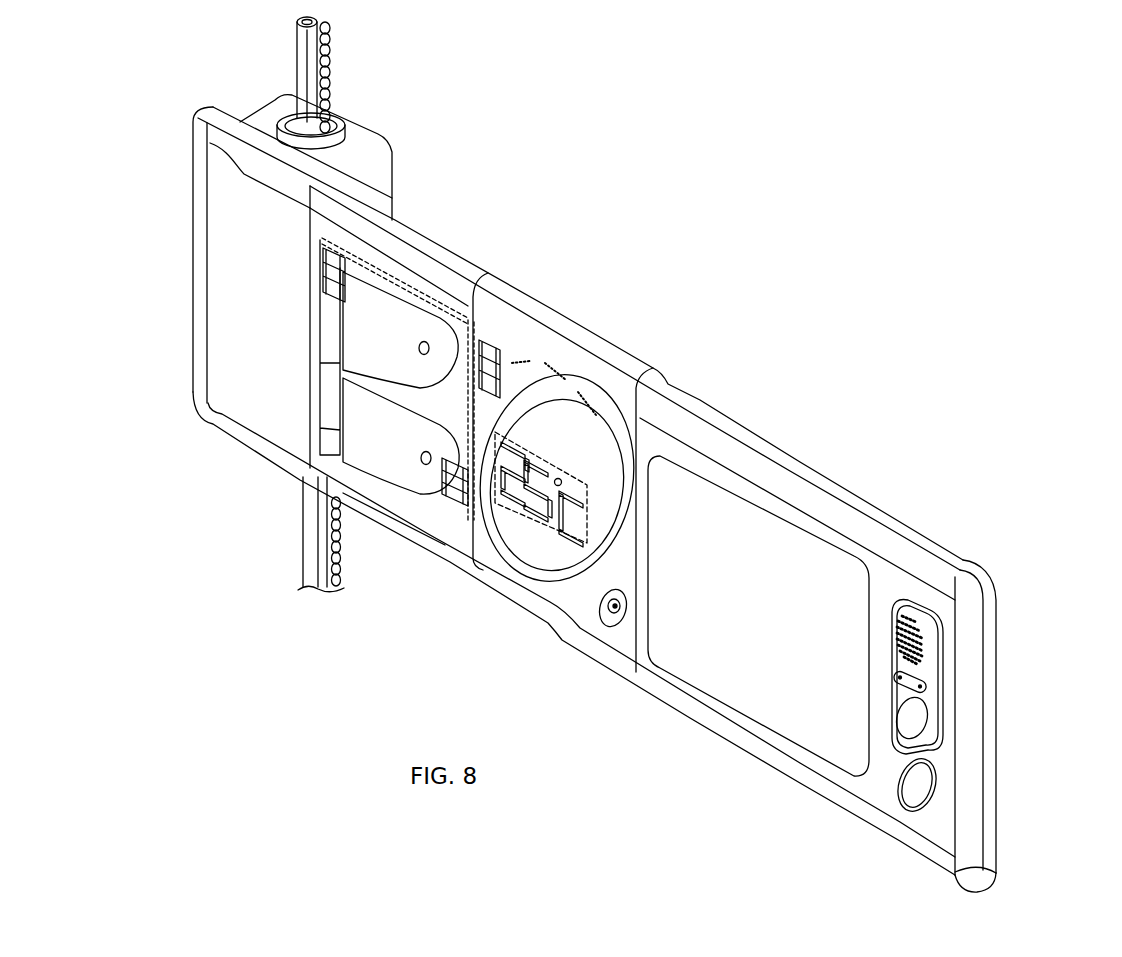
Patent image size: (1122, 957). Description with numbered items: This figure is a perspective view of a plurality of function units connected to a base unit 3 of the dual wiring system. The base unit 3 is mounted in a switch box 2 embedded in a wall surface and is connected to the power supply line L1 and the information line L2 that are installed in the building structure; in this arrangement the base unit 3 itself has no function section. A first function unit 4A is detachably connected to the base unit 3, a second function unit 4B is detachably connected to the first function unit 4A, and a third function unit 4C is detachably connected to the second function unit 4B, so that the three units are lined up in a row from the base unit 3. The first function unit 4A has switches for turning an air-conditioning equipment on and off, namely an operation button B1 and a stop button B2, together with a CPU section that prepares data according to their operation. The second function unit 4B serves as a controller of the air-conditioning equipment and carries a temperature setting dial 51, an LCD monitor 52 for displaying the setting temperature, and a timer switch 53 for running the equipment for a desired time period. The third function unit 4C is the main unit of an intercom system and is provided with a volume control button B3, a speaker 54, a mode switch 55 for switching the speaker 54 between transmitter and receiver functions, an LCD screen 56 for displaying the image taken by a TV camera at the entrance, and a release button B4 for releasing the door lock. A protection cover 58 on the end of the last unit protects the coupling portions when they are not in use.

The switch box 2 is at (385, 183).
The base unit 3 is at (220, 192).
The first function unit 4A is at (415, 258).
The second function unit 4B is at (547, 338).
The third function unit 4C is at (797, 490).
The temperature setting dial 51 is at (550, 407).
The LCD monitor 52 is at (523, 497).
The timer switch 53 is at (607, 613).
The speaker 54 is at (920, 640).
The mode switch 55 is at (913, 720).
The LCD screen 56 is at (765, 645).
The protection cover 58 is at (973, 750).
The operation button B1 is at (368, 325).
The stop button B2 is at (377, 420).
The volume control button B3 is at (903, 682).
The release button B4 is at (897, 790).
The power supply line L1 is at (305, 82).
The information line L2 is at (337, 95).